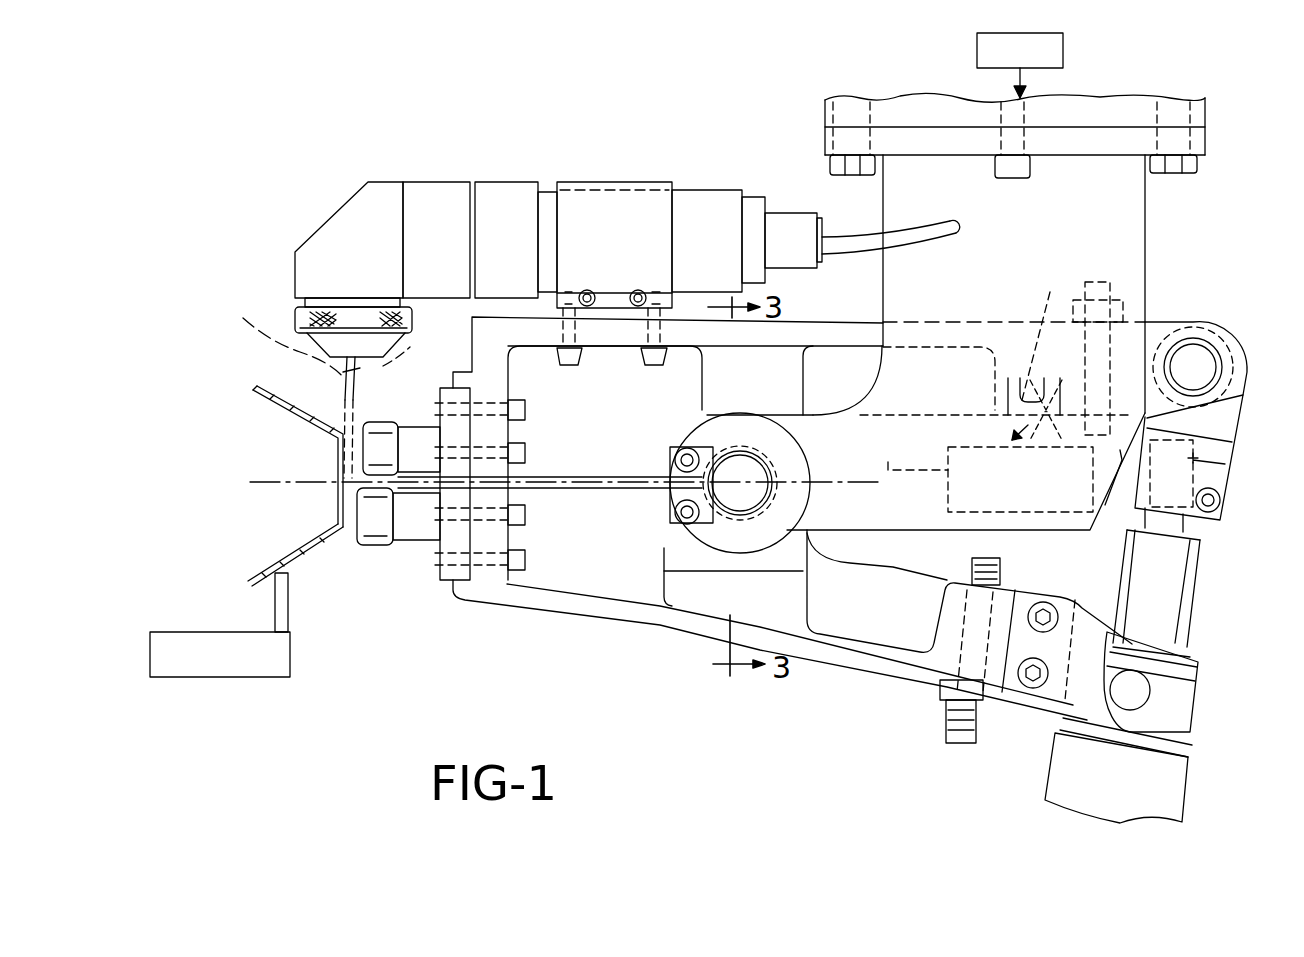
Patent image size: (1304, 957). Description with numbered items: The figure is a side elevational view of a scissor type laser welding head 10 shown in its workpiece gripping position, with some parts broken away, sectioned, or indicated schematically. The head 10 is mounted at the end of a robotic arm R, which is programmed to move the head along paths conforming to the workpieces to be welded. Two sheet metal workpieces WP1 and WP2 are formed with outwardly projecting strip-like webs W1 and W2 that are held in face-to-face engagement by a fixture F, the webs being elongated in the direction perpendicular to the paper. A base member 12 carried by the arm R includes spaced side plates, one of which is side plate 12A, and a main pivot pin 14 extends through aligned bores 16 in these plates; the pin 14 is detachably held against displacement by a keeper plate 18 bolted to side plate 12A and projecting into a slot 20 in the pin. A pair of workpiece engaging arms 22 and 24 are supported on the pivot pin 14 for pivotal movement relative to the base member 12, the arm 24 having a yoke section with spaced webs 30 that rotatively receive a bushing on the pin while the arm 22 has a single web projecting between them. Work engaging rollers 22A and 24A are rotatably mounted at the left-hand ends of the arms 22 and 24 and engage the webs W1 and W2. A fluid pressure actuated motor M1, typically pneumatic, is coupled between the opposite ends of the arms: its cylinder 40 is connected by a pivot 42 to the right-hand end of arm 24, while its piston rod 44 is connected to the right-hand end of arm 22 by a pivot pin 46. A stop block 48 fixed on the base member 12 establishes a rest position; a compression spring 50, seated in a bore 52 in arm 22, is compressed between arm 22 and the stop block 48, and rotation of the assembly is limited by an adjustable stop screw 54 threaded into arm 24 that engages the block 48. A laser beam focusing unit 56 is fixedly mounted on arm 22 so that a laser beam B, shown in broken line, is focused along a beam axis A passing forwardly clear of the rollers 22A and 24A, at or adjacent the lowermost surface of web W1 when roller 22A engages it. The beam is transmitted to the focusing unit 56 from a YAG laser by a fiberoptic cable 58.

The scissor type laser welding head 10 is at (1285, 190).
The base member 12 is at (1108, 203).
The side plate 12A is at (985, 308).
The main pivot pin 14 is at (755, 478).
The aligned bores 16 is at (736, 455).
The keeper plate 18 is at (697, 525).
The slot 20 is at (722, 490).
The workpiece engaging arm 22 is at (790, 324).
The work engaging roller 22A is at (385, 422).
The workpiece engaging arm 24 is at (693, 617).
The work engaging roller 24A is at (375, 545).
The yoke webs 30 is at (672, 548).
The cylinder 40 is at (1057, 768).
The pivot 42 is at (1143, 690).
The piston rod 44 is at (1185, 528).
The pivot pin 46 is at (1200, 358).
The stop block 48 is at (995, 429).
The compression spring 50 is at (1031, 359).
The spring seat defining bore 52 is at (1052, 292).
The adjustable stop screw 54 is at (1002, 571).
The laser beam focusing unit 56 is at (548, 156).
The fiberoptic cable 58 is at (905, 230).
The robotic arm R is at (1082, 12).
The fluid pressure actuated motor M1 is at (1255, 720).
The fixture F is at (230, 660).
The workpiece WP1 is at (268, 400).
The workpiece WP2 is at (287, 567).
The web W1 is at (362, 466).
The web W2 is at (365, 496).
The beam axis A is at (388, 397).
The laser beam B is at (287, 332).